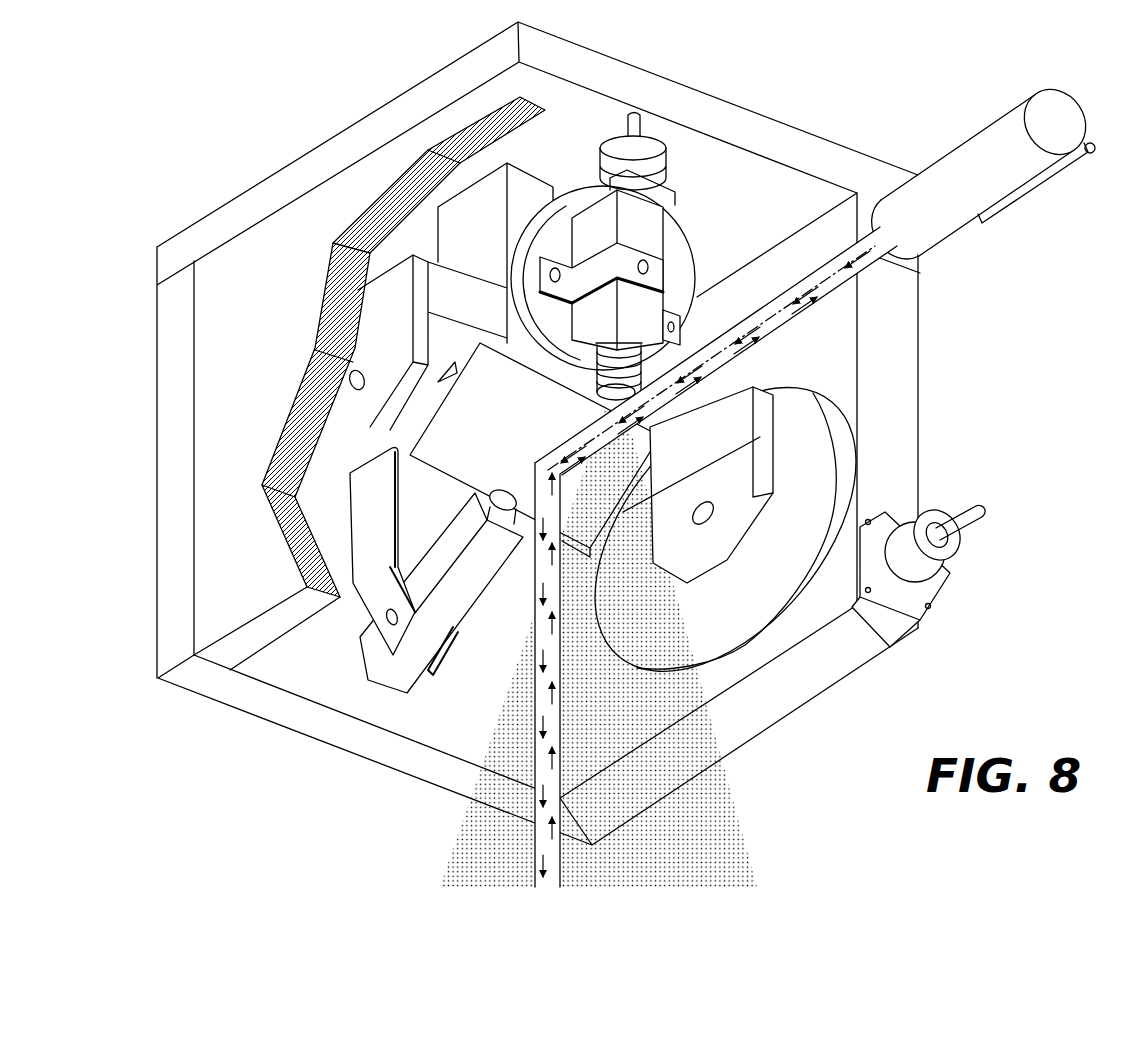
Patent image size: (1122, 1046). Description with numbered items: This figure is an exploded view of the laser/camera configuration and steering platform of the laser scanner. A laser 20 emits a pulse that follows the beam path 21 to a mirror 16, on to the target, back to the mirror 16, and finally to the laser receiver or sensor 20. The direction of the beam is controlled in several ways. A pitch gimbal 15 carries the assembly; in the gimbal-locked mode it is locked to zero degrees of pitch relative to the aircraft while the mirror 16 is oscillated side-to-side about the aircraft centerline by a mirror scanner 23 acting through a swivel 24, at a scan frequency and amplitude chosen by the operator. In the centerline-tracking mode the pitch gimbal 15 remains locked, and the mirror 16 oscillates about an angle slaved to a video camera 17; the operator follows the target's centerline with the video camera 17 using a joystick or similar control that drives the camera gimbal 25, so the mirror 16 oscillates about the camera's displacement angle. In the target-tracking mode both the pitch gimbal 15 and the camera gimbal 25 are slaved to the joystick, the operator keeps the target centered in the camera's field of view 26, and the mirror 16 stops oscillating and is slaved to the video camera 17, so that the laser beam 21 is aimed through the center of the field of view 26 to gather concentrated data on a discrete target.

The pitch gimbal 15 is at (823, 437).
The mirror 16 is at (468, 410).
The video camera 17 is at (643, 217).
The laser 20 is at (965, 160).
The beam path 21 is at (803, 300).
The mirror scanner 23 is at (395, 677).
The swivel 24 is at (502, 512).
The camera gimbal 25 is at (560, 207).
The camera's field of view 26 is at (712, 832).